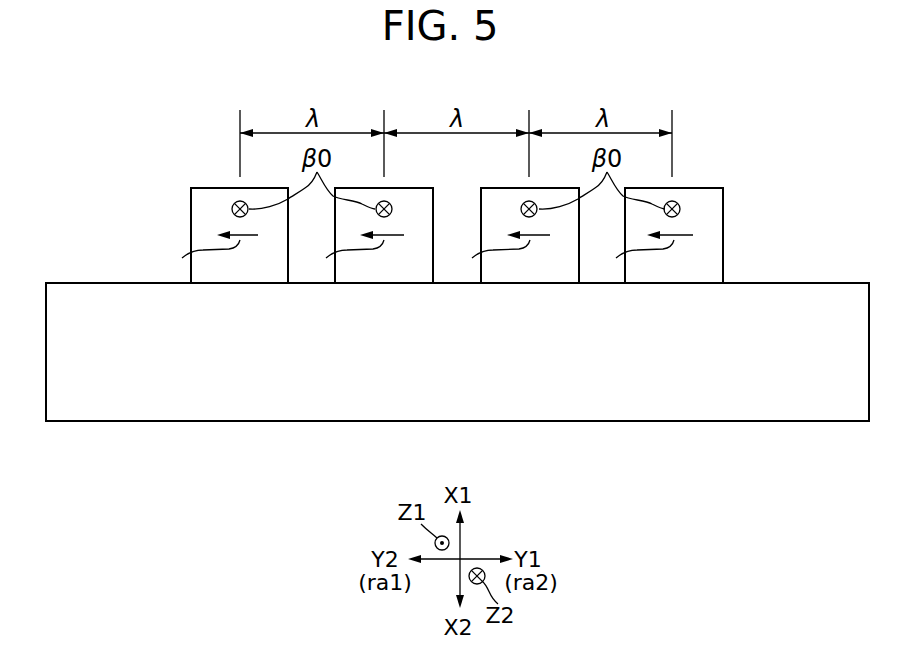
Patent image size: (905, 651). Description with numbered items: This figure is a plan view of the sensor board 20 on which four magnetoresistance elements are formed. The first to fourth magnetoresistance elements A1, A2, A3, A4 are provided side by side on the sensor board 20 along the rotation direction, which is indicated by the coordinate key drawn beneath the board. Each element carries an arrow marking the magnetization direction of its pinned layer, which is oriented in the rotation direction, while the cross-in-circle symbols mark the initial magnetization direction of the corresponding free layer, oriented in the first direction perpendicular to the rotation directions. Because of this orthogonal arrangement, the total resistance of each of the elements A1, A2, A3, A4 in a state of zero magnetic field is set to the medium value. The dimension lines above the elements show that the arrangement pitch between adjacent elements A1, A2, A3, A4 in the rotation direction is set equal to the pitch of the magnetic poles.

The sensor board 20 is at (104, 410).
The first magnetoresistance element A1 is at (246, 272).
The second magnetoresistance element A2 is at (395, 272).
The third magnetoresistance element A3 is at (542, 272).
The fourth magnetoresistance element A4 is at (685, 272).